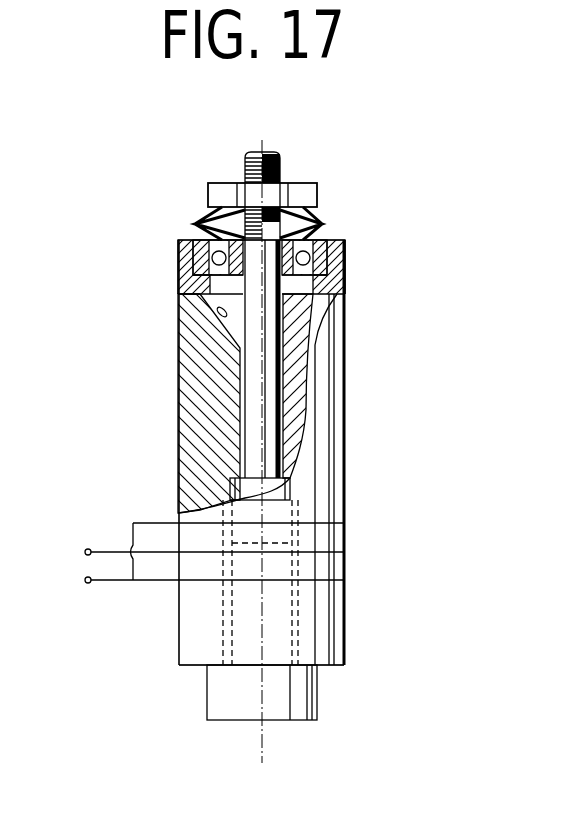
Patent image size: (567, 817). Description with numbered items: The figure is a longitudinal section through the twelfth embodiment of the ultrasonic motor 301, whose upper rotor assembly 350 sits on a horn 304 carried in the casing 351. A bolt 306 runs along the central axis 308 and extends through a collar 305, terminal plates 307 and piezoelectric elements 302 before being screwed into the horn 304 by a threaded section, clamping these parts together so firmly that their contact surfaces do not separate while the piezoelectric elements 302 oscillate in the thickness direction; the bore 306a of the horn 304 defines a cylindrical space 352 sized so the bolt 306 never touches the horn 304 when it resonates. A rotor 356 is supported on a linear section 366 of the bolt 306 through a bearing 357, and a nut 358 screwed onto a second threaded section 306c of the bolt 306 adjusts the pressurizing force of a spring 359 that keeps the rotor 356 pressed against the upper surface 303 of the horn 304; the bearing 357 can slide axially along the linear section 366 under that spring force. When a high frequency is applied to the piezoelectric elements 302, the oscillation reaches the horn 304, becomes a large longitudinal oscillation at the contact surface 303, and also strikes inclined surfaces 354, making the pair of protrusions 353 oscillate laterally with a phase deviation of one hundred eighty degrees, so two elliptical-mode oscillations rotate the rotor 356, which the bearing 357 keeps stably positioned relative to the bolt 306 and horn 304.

The actuator body assembly 301 is at (178, 438).
The piezoelectric elements 302 is at (345, 530).
The upper surface of the horn 303 is at (178, 275).
The horn 304 is at (327, 462).
The collar 305 is at (187, 628).
The bolt 306 is at (217, 693).
The bore 306a is at (293, 623).
The second threaded section of the bolt 306c is at (277, 155).
The terminal plates 307 is at (160, 523).
The center axis 308 is at (262, 743).
The rotary head assembly 350 is at (142, 322).
The casing wall 351 is at (178, 410).
The inner cavity 352 is at (345, 335).
The protrusions of the horn 353 is at (180, 337).
The inclined surfaces 354 is at (180, 302).
The rotor 356 is at (345, 243).
The bearing 357 is at (317, 237).
The nut 358 is at (310, 187).
The spring 359 is at (210, 222).
The linear section of the bolt 366 is at (247, 378).